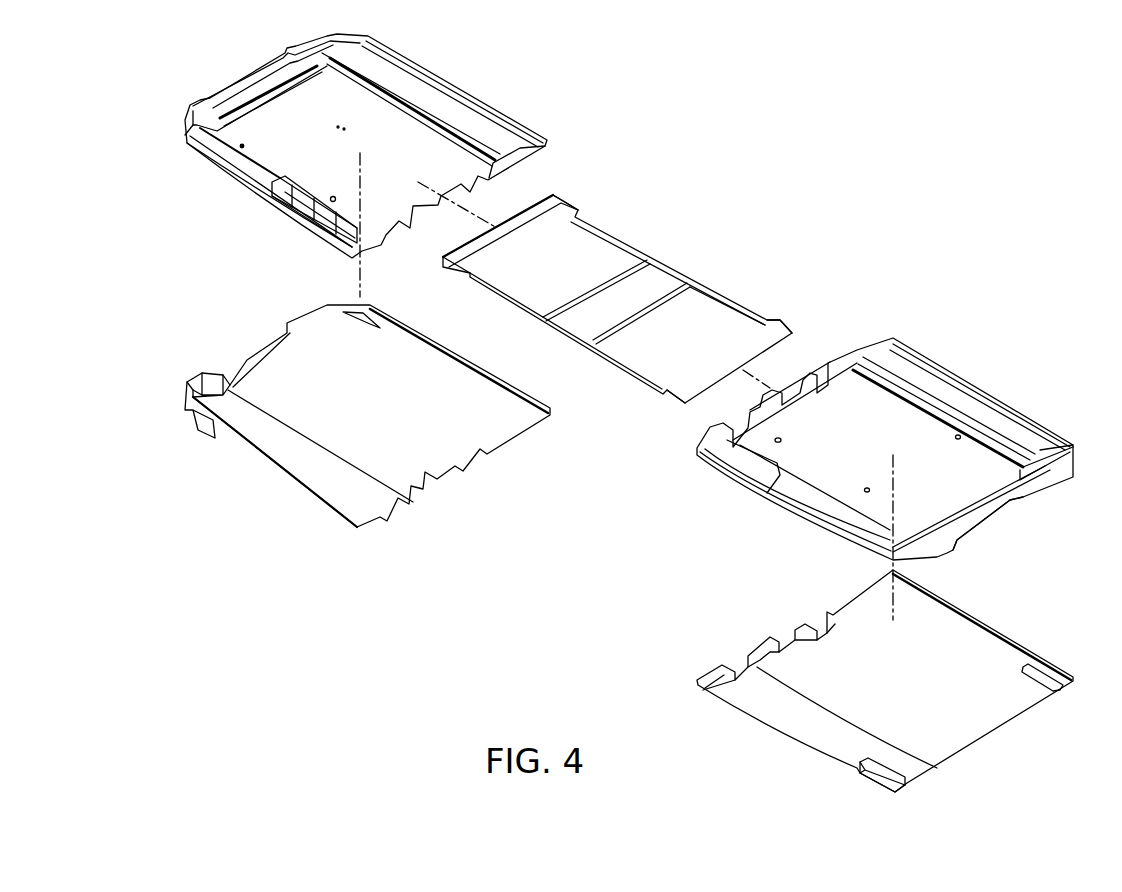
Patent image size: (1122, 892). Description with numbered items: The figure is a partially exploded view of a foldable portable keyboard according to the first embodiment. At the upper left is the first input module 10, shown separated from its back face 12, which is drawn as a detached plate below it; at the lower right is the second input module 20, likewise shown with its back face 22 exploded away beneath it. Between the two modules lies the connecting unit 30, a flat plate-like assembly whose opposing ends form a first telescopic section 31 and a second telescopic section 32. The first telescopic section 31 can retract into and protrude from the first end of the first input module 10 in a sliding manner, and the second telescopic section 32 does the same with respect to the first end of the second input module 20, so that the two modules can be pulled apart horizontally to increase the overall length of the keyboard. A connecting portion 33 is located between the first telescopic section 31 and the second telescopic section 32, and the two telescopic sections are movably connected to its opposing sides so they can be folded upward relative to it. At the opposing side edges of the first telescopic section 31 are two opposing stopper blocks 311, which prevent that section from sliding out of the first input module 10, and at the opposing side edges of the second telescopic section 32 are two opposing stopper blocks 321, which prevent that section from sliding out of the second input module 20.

The first input module 10 is at (495, 96).
The back face 12 is at (347, 423).
The second input module 20 is at (993, 384).
The back face 22 is at (843, 700).
The connecting unit 30 is at (629, 301).
The first telescopic section 31 is at (573, 250).
The second telescopic section 32 is at (715, 322).
The connecting portion 33 is at (650, 283).
The stopper block 311 is at (565, 202).
The stopper block 321 is at (726, 369).